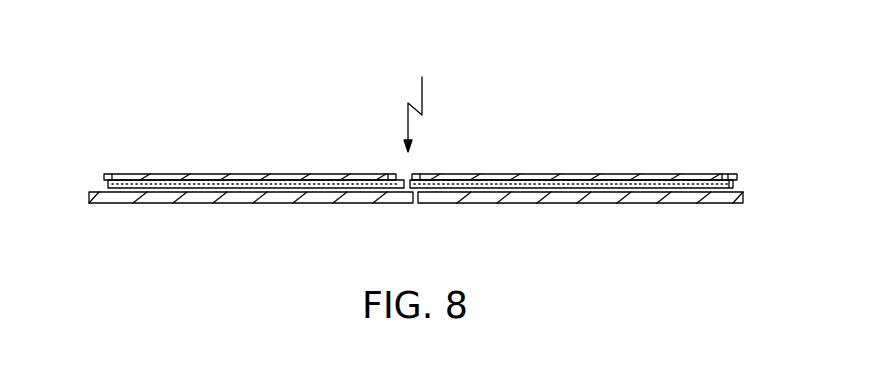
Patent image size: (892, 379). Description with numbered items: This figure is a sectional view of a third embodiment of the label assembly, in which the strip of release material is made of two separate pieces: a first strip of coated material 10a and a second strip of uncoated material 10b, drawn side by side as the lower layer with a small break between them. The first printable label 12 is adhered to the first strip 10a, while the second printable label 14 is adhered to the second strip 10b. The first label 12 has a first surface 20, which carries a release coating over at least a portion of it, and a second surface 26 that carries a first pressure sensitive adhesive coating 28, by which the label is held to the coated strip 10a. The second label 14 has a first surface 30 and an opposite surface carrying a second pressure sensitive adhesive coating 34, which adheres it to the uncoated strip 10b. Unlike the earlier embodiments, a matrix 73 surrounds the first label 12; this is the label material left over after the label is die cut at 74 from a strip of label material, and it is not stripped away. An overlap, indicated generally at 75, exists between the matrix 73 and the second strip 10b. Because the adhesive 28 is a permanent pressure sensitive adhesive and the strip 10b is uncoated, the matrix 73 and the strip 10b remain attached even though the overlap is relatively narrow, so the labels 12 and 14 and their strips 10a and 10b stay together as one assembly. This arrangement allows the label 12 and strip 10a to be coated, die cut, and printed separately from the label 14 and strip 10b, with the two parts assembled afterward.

The first strip of coated material 10a is at (554, 204).
The second strip of uncoated material 10b is at (158, 204).
The first printable label 12 is at (574, 151).
The second printable label 14 is at (104, 175).
The first surface 20 is at (607, 174).
The second surface 26 is at (492, 189).
The first pressure sensitive adhesive coating 28 is at (735, 185).
The first surface 30 is at (140, 174).
The second pressure sensitive adhesive coating 34 is at (106, 184).
The matrix 73 is at (403, 174).
The die cut 74 is at (413, 174).
The overlap 75 is at (419, 100).